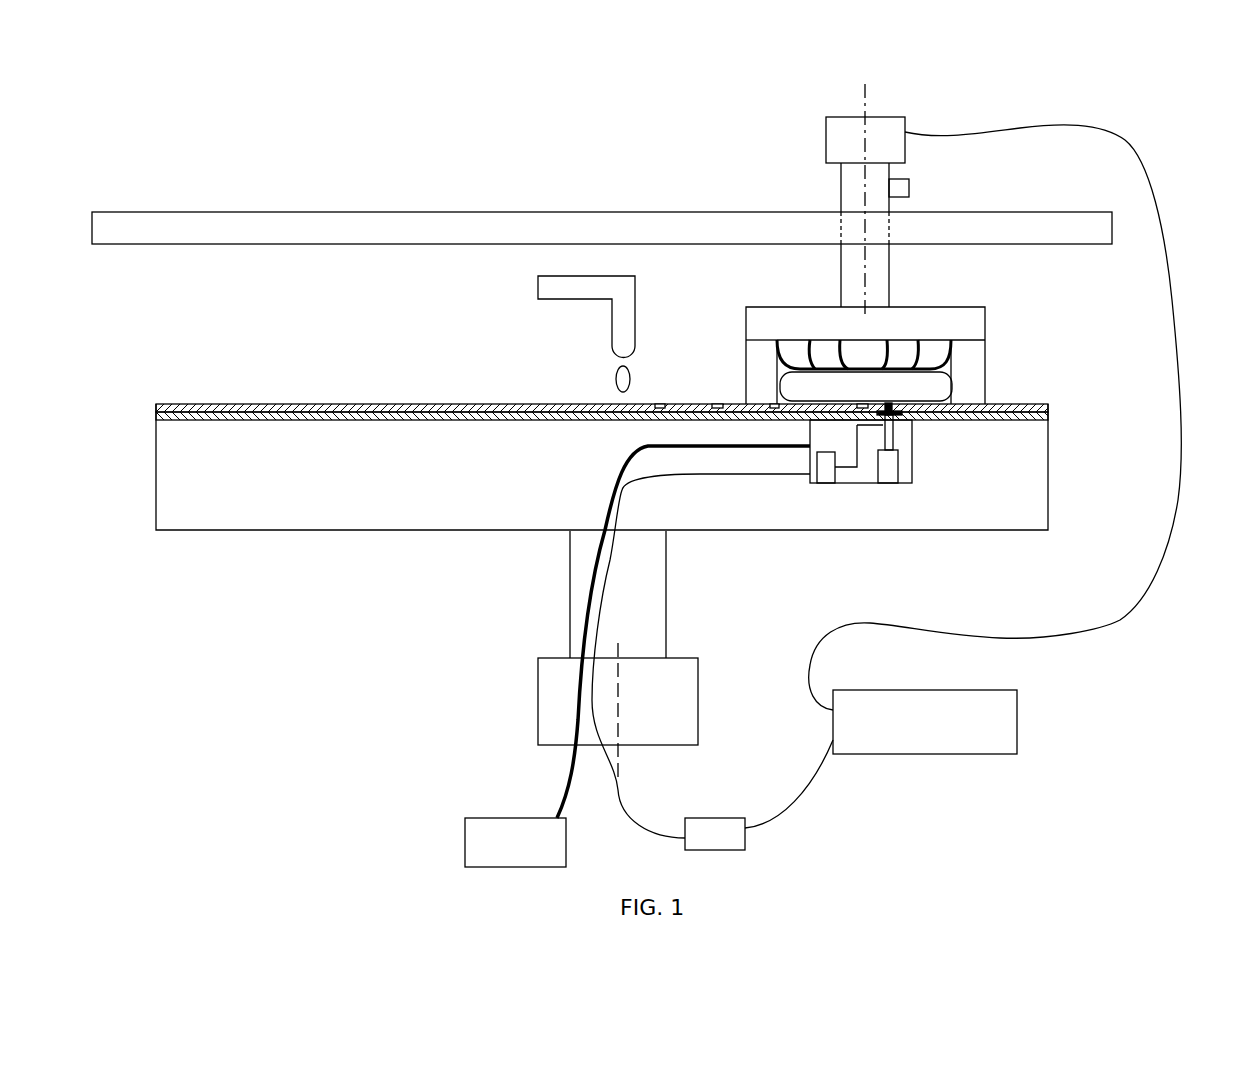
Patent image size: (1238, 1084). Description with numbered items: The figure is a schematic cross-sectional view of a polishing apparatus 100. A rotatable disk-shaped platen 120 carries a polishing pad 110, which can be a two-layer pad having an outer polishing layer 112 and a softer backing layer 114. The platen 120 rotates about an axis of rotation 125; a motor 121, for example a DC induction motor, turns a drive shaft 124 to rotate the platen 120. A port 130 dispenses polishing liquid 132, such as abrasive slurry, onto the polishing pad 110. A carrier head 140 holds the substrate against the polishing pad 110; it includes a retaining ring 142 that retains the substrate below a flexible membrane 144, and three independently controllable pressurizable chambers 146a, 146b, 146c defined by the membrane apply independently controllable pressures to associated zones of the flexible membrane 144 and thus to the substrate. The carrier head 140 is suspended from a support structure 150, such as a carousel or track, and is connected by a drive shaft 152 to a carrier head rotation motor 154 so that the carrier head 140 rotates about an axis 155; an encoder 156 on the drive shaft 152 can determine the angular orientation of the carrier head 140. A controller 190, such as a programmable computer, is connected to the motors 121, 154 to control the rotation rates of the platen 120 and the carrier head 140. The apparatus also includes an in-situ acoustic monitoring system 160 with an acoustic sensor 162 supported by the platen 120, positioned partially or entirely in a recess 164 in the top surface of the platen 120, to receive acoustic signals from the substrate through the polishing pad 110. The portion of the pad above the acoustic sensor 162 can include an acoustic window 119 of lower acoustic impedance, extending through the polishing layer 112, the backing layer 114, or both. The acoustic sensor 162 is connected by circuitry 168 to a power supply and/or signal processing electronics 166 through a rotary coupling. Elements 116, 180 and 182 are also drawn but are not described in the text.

The polishing apparatus 100 is at (148, 155).
The polishing pad 110 is at (651, 437).
The polishing layer 112 is at (1050, 406).
The backing layer 114 is at (1050, 416).
The pad opening 116 is at (712, 400).
The acoustic window 119 is at (860, 414).
The platen 120 is at (1050, 463).
The motor 121 is at (538, 695).
The drive shaft 124 is at (570, 607).
The axis of rotation 125 is at (620, 770).
The port 130 is at (612, 317).
The polishing liquid 132 is at (615, 378).
The carrier head 140 is at (872, 333).
The retaining ring 142 is at (985, 358).
The flexible membrane 144 is at (952, 388).
The chamber 146a is at (862, 352).
The chamber 146b is at (905, 355).
The chamber 146c is at (945, 355).
The support structure 150 is at (460, 212).
The drive shaft 152 is at (840, 290).
The carrier head rotation motor 154 is at (826, 142).
The axis 155 is at (868, 98).
The encoder 156 is at (910, 190).
The in-situ acoustic monitoring system 160 is at (861, 495).
The acoustic sensor 162 is at (895, 440).
The recess 164 is at (900, 470).
The power supply and/or signal processing electronics 166 is at (712, 662).
The circuitry 168 is at (827, 484).
The fluid source 180 is at (515, 842).
The fluid conduit 182 is at (555, 795).
The controller 190 is at (1017, 720).